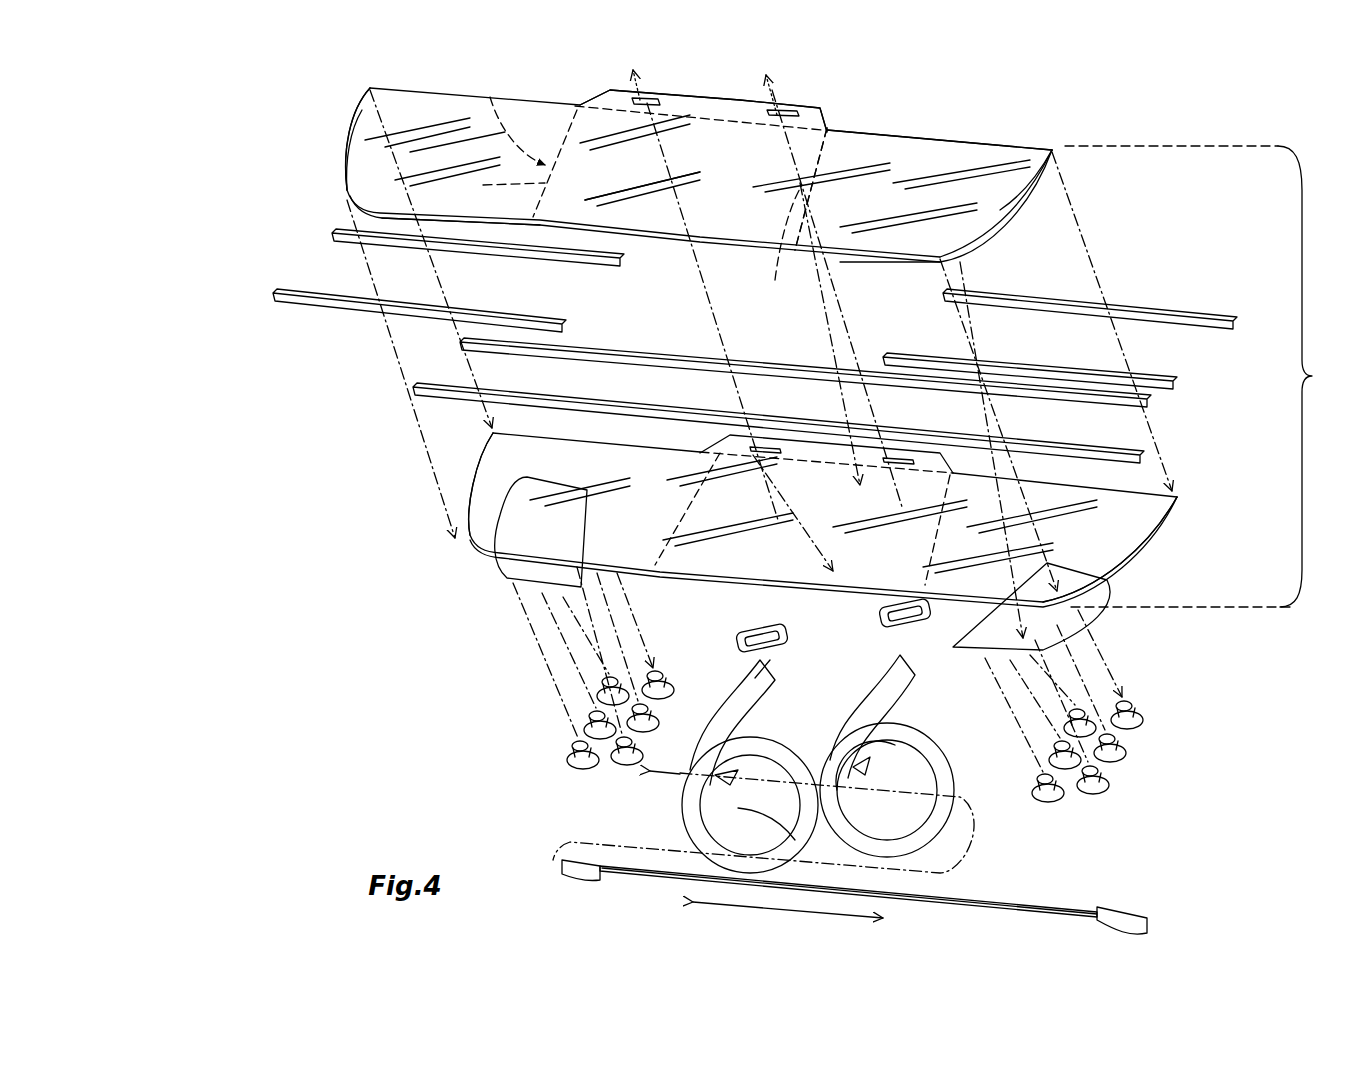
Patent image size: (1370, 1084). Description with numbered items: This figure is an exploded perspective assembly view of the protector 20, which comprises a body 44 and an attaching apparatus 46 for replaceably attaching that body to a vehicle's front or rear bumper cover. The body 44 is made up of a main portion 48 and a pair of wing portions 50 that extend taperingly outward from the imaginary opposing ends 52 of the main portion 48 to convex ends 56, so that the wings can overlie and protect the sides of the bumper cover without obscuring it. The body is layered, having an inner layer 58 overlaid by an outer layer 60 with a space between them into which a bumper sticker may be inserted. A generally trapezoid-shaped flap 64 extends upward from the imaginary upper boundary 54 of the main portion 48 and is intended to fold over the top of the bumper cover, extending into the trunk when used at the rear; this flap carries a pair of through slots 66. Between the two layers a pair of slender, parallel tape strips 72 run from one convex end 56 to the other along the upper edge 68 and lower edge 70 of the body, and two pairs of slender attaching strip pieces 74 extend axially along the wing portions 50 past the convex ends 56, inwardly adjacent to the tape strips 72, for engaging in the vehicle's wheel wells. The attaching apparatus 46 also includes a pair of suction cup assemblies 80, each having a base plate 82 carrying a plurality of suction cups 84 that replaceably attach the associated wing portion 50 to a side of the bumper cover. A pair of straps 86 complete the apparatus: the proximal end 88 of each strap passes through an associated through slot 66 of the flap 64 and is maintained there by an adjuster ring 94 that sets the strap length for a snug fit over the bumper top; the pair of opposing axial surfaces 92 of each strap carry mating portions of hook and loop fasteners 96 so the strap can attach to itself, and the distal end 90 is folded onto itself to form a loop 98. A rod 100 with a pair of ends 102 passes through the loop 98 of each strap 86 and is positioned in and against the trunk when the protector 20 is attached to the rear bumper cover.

The protector 20 is at (212, 148).
The body 44 is at (1212, 376).
The attaching apparatus 46 is at (337, 233).
The main portion 48 is at (660, 205).
The wing portions 50 is at (558, 203).
The imaginary opposing ends 52 is at (621, 241).
The imaginary upper boundary 54 is at (506, 113).
The convex ends 56 is at (348, 137).
The inner layer 58 is at (472, 505).
The outer layer 60 is at (370, 160).
The flap 64 is at (738, 97).
The through slots 66 is at (630, 101).
The upper edge 68 is at (930, 130).
The lower edge 70 is at (806, 258).
The tape strips 72 is at (518, 388).
The attaching strip pieces 74 is at (342, 246).
The suction cup assemblies 80 is at (505, 578).
The base plate 82 is at (545, 482).
The suction cups 84 is at (565, 762).
The straps 86 is at (680, 806).
The proximal end 88 is at (885, 672).
The distal end 90 is at (869, 784).
The opposing axial surfaces 92 is at (717, 787).
The adjuster ring 94 is at (775, 650).
The hook and loop fasteners 96 is at (1000, 780).
The loop 98 is at (798, 838).
The rod 100 is at (1038, 898).
The ends 102 is at (597, 858).